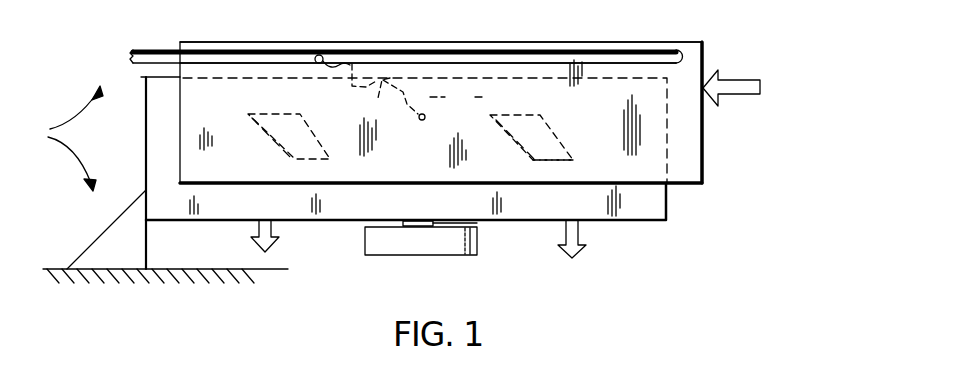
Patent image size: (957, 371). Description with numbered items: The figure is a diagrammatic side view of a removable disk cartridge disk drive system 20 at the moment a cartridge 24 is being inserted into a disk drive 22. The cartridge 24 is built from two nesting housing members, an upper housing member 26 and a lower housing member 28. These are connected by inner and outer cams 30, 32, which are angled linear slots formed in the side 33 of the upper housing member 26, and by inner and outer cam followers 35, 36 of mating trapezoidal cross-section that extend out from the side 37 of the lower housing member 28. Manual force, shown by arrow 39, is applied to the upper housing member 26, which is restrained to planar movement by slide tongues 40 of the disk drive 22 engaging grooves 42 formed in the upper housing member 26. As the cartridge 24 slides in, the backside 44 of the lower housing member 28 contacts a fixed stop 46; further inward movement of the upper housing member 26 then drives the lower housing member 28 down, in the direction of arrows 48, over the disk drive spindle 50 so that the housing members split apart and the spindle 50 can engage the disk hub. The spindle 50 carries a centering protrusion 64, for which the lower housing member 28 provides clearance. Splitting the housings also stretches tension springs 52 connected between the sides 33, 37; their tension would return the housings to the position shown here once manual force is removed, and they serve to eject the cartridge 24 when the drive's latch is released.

The removable disk cartridge disk drive system 20 is at (694, 31).
The disk drive 22 is at (60, 138).
The cartridge 24 is at (688, 134).
The upper housing member 26 is at (688, 168).
The lower housing member 28 is at (655, 206).
The inner cam 30 is at (352, 150).
The outer cam 32 is at (560, 151).
The side of upper housing member 33 is at (458, 97).
The inner cam follower 35 is at (301, 117).
The outer cam follower 36 is at (547, 117).
The side of lower housing member 37 is at (467, 200).
The arrow (manual force) 39 is at (742, 80).
The slide tongues 40 is at (163, 51).
The grooves 42 is at (208, 57).
The backside of lower housing member 44 is at (146, 146).
The fixed stop 46 is at (118, 228).
The arrows (downward movement) 48 is at (259, 226).
The disk drive spindle 50 is at (465, 255).
The tension springs 52 is at (390, 78).
The centering protrusion 64 is at (474, 223).